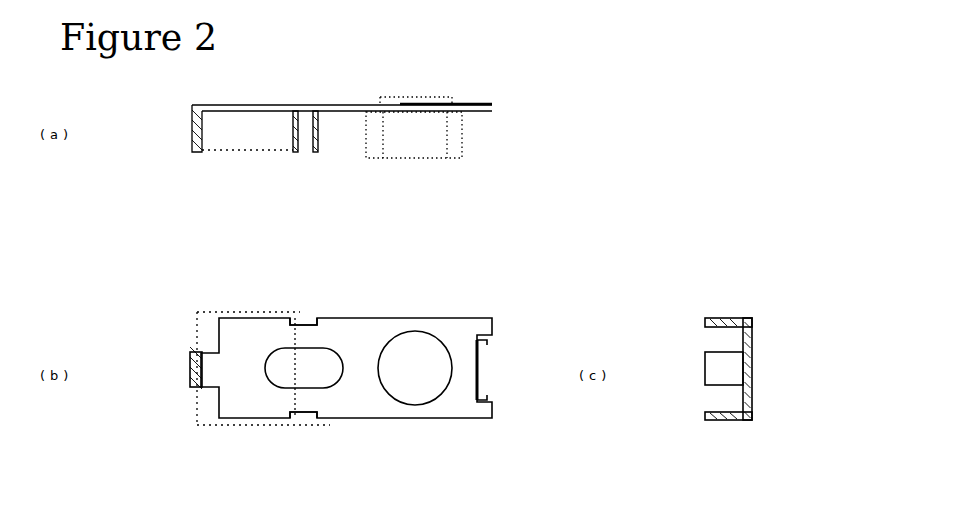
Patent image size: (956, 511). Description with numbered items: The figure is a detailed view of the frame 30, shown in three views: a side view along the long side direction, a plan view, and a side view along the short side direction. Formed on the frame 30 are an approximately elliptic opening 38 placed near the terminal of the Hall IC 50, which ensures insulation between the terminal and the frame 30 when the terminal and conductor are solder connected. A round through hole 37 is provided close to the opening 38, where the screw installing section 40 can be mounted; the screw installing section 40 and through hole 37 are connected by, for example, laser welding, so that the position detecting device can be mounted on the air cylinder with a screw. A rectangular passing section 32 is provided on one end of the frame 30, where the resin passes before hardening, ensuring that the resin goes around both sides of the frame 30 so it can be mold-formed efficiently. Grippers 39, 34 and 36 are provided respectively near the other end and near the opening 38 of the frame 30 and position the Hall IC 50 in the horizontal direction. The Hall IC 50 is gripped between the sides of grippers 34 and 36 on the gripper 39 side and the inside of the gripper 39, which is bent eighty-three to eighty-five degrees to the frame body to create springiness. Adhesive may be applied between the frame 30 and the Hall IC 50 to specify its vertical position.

The frame 30 is at (352, 98).
The passing section 32 is at (486, 349).
The gripper 34 is at (311, 152).
The gripper 36 is at (316, 318).
The through hole 37 is at (443, 338).
The opening 38 is at (336, 386).
The gripper 39 is at (190, 122).
The screw installing section 40 is at (466, 140).
The Hall IC 50 is at (240, 152).